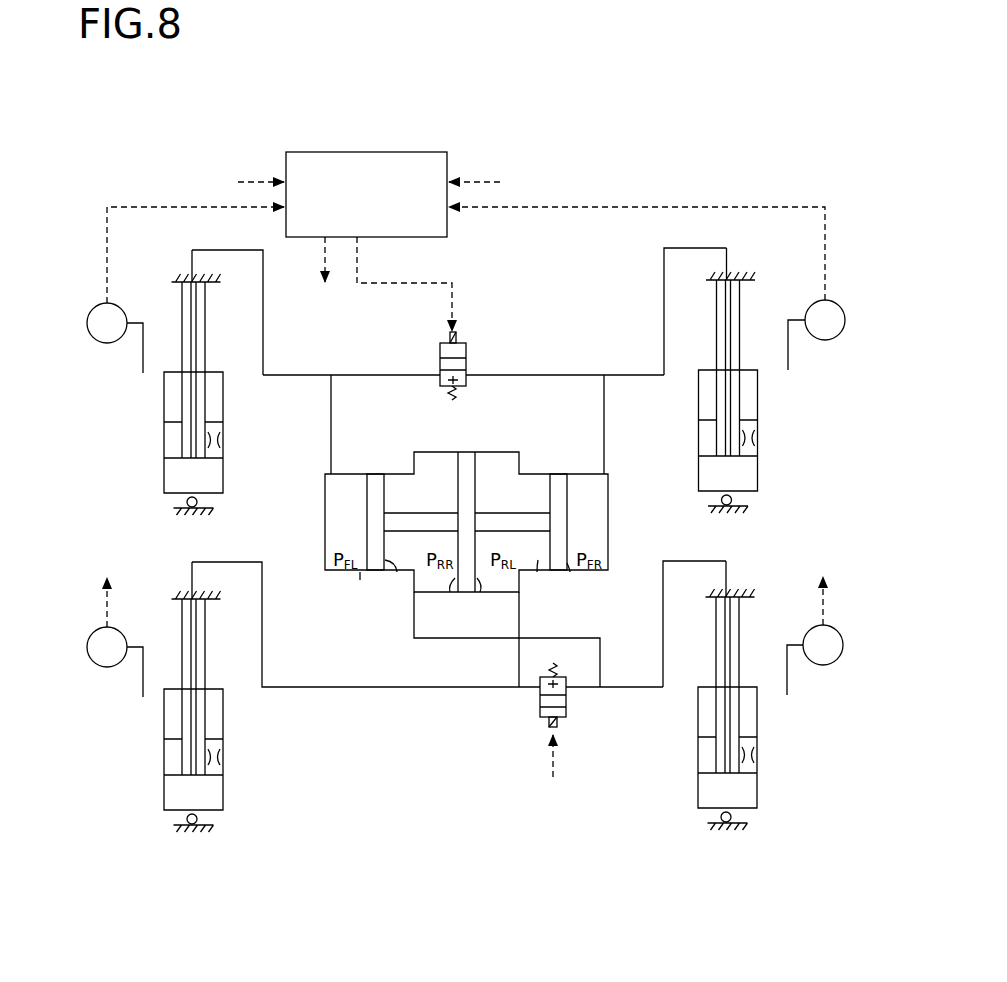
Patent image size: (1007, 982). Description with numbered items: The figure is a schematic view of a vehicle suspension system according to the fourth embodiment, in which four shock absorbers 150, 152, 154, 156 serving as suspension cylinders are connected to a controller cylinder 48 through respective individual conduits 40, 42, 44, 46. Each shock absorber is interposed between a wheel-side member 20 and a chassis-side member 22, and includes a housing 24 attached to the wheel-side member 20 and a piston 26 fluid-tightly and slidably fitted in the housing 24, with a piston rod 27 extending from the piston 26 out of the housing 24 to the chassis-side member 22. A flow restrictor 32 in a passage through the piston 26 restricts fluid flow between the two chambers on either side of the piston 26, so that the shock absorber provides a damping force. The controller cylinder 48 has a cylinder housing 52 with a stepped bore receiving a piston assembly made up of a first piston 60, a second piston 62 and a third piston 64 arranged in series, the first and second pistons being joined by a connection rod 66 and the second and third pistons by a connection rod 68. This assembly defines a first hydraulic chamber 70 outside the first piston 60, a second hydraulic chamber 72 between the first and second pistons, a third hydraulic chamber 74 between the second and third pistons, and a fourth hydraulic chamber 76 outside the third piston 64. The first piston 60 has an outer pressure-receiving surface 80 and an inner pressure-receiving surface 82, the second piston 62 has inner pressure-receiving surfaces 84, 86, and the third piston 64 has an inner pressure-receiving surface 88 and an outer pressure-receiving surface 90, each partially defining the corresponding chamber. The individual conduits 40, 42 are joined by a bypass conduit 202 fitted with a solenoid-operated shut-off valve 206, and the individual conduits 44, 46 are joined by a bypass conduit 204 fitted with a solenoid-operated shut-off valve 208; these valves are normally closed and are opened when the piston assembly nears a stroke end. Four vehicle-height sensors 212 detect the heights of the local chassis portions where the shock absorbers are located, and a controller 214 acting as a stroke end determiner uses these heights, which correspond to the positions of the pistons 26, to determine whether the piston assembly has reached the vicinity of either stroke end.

The controller 214 is at (386, 153).
The vehicle-height sensor 212 is at (90, 310).
The bypass conduit 202 is at (583, 375).
The bypass conduit 204 is at (578, 687).
The solenoid-operated shut-off valve 206 is at (440, 358).
The solenoid-operated shut-off valve 208 is at (540, 695).
The individual conduit 40 is at (295, 375).
The individual conduit 42 is at (648, 375).
The individual conduit 44 is at (330, 688).
The individual conduit 46 is at (662, 588).
The controller cylinder 48 is at (518, 428).
The cylinder housing 52 is at (325, 497).
The first piston 60 is at (376, 482).
The second piston 62 is at (456, 455).
The third piston 64 is at (528, 522).
The connection rod 66 is at (407, 522).
The connection rod 68 is at (557, 480).
The first hydraulic chamber 70 is at (350, 515).
The second hydraulic chamber 72 is at (427, 457).
The third hydraulic chamber 74 is at (502, 458).
The fourth hydraulic chamber 76 is at (593, 518).
The outer pressure-receiving surface 80 is at (360, 580).
The inner pressure-receiving surface 82 is at (397, 572).
The inner pressure-receiving surface 84 is at (450, 592).
The inner pressure-receiving surface 86 is at (480, 592).
The inner pressure-receiving surface 88 is at (537, 572).
The outer pressure-receiving surface 90 is at (570, 572).
The wheel-side member 20 is at (173, 508).
The chassis-side member 22 is at (172, 598).
The housing 24 is at (223, 375).
The piston 26 is at (167, 445).
The piston rod 27 is at (205, 313).
The flow restrictor 32 is at (222, 447).
The shock absorber 150 is at (153, 432).
The shock absorber 152 is at (767, 430).
The shock absorber 154 is at (237, 753).
The shock absorber 156 is at (678, 753).